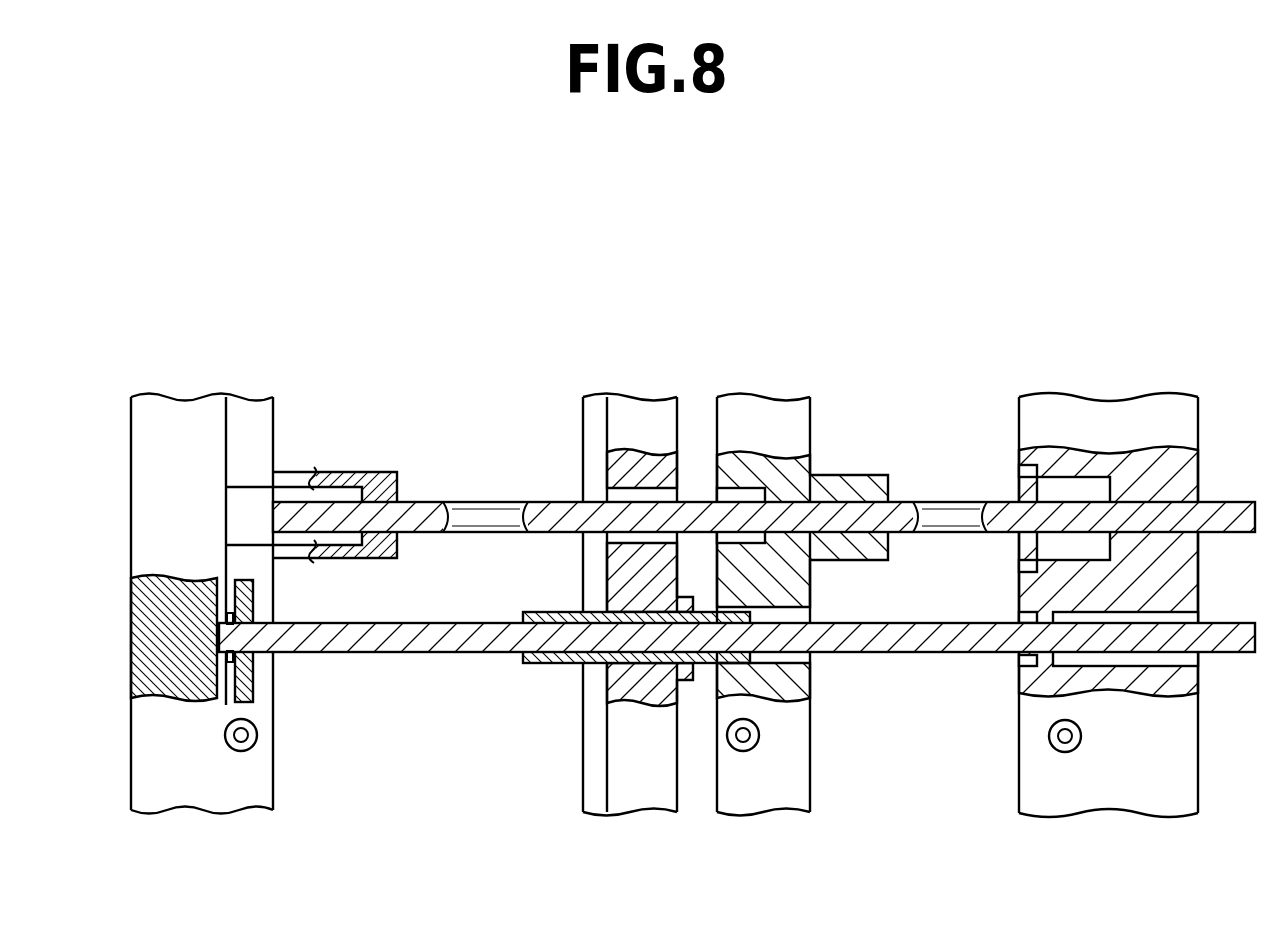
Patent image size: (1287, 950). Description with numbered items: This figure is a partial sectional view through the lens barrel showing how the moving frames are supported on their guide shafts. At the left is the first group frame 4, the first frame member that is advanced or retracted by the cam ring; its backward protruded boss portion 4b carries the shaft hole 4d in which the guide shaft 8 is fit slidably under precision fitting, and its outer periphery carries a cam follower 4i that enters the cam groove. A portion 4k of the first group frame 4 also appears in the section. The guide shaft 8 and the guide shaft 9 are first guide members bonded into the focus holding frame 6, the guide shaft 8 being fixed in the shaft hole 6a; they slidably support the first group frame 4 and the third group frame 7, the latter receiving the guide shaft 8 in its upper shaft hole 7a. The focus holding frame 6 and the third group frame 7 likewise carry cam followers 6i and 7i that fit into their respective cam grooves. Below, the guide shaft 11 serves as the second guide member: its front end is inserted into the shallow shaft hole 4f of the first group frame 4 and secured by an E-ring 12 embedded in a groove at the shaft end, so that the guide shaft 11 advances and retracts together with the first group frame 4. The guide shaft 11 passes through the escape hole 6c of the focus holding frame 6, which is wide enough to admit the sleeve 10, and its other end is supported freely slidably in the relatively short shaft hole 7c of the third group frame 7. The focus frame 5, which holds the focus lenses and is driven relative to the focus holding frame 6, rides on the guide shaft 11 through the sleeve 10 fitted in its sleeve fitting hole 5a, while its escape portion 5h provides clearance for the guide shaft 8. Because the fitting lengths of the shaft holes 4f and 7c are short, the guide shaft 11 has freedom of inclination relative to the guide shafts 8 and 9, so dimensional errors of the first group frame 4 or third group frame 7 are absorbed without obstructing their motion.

The first group frame 4 is at (191, 422).
The boss portion 4b is at (340, 473).
The shaft hole 4d is at (378, 495).
The bearing block 4k is at (220, 667).
The shaft hole 4f is at (253, 675).
The cam follower 4i is at (241, 752).
The focus frame 5 is at (652, 395).
The escape portion 5h is at (628, 482).
The sleeve fitting hole 5a is at (641, 672).
The focus holding frame 6 is at (760, 395).
The shaft hole 6a is at (848, 497).
The cam follower 6i is at (745, 752).
The escape hole 6c is at (770, 675).
The third group frame 7 is at (1143, 395).
The shaft hole 7a is at (1173, 500).
The cam follower 7i is at (1066, 752).
The shaft hole 7c is at (1047, 657).
The guide shaft 8 is at (548, 510).
The guide shaft 9 is at (480, 505).
The sleeve 10 is at (543, 665).
The guide shaft 11 is at (935, 657).
The E-ring 12 is at (232, 660).